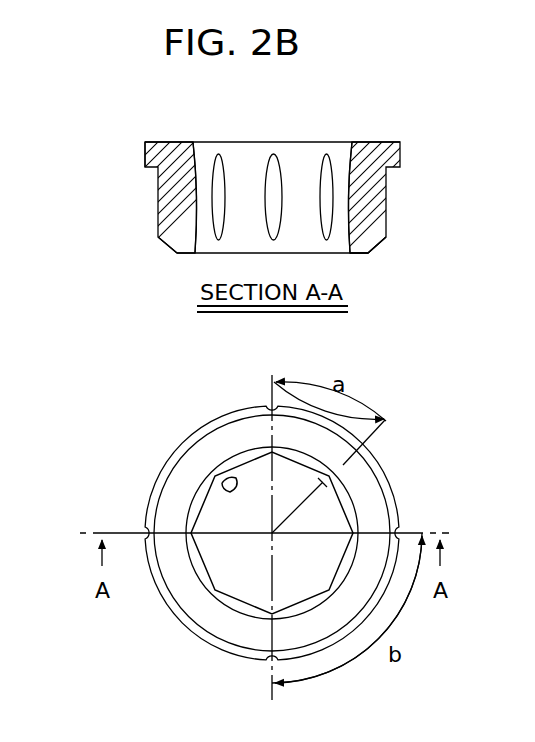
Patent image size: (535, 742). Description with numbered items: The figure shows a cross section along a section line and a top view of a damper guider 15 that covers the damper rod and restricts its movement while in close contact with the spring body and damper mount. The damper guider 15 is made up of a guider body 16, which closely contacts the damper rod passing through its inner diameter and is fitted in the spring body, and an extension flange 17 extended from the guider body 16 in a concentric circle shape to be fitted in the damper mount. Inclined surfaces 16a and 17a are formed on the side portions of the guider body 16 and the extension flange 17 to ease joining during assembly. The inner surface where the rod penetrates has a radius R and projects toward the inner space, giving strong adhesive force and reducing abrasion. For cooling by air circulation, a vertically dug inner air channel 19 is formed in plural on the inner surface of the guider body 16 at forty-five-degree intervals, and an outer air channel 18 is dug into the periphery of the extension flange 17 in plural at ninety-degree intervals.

The damper guider 15 is at (190, 136).
The guider body 16 is at (167, 245).
The inclined surface 16a is at (373, 246).
The extension flange 17 is at (148, 157).
The inclined surface 17a is at (143, 141).
The outer air channel 18 is at (266, 664).
The inner air channel 19 is at (273, 173).
The radius R is at (190, 197).